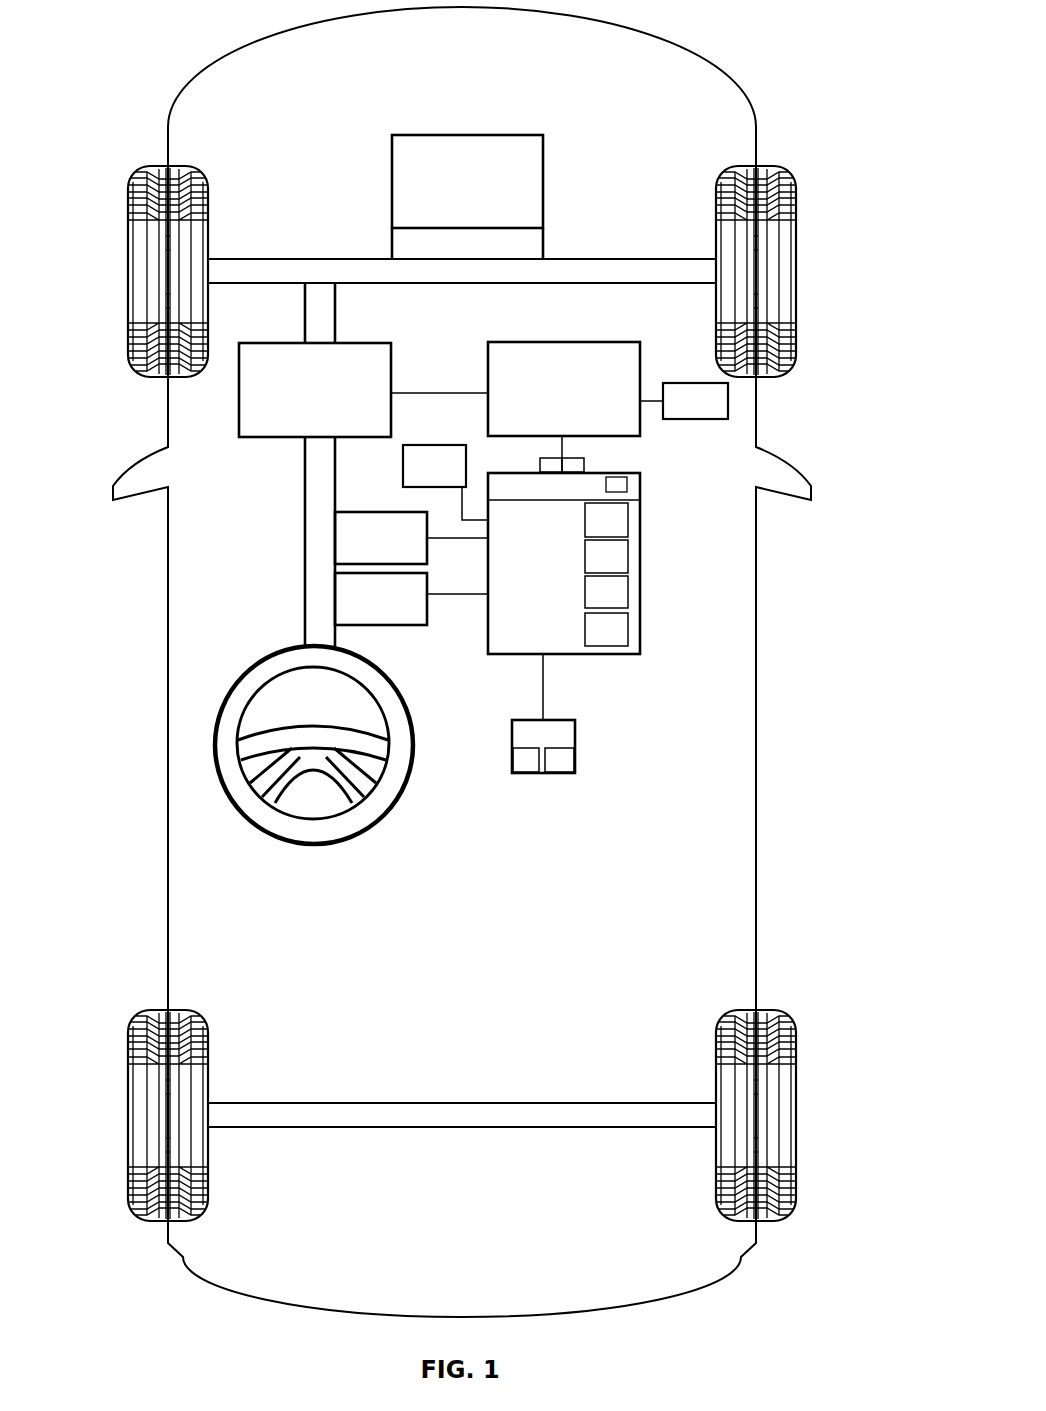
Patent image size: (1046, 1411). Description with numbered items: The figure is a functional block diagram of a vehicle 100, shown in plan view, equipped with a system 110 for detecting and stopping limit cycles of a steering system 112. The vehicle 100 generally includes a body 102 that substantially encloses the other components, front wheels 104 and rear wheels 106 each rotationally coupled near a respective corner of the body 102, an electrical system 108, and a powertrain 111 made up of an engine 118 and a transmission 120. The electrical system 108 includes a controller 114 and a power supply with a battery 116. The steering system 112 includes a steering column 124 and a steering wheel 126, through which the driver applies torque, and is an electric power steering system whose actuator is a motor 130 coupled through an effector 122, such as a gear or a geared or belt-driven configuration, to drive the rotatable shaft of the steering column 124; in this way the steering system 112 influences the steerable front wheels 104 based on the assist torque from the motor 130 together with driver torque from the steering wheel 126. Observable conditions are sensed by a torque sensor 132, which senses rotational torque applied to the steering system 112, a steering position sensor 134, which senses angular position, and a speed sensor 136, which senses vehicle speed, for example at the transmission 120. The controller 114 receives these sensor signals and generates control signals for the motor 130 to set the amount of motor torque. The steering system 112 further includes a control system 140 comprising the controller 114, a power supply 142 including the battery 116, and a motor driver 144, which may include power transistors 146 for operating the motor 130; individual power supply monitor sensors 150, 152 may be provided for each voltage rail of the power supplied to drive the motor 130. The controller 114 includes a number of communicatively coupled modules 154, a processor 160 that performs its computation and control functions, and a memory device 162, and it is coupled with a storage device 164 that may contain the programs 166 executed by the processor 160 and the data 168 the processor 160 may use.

The vehicle 100 is at (724, 35).
The body 102 is at (168, 745).
The front wheels 104 is at (128, 268).
The rear wheels 106 is at (128, 1105).
The electrical system 108 is at (520, 328).
The system 110 is at (292, 583).
The powertrain 111 is at (553, 158).
The steering system 112 is at (430, 802).
The controller 114 is at (513, 597).
The battery 116 is at (678, 414).
The engine 118 is at (449, 196).
The transmission 120 is at (392, 242).
The effector 122 is at (296, 404).
The steering column 124 is at (305, 537).
The steering wheel 126 is at (413, 745).
The motor 130 is at (545, 403).
The torque sensor 132 is at (362, 552).
The steering position sensor 134 is at (362, 613).
The speed sensor 136 is at (415, 480).
The control system 140 is at (673, 569).
The power supply 142 is at (745, 408).
The motor driver 144 is at (641, 490).
The power transistors 146 is at (630, 480).
The power supply monitor sensor 150 is at (540, 465).
The power supply monitor sensor 152 is at (584, 466).
The modules 154 is at (644, 522).
The processor 160 is at (590, 603).
The memory device 162 is at (590, 640).
The storage device 164 is at (575, 735).
The programs 166 is at (512, 760).
The data 168 is at (575, 760).